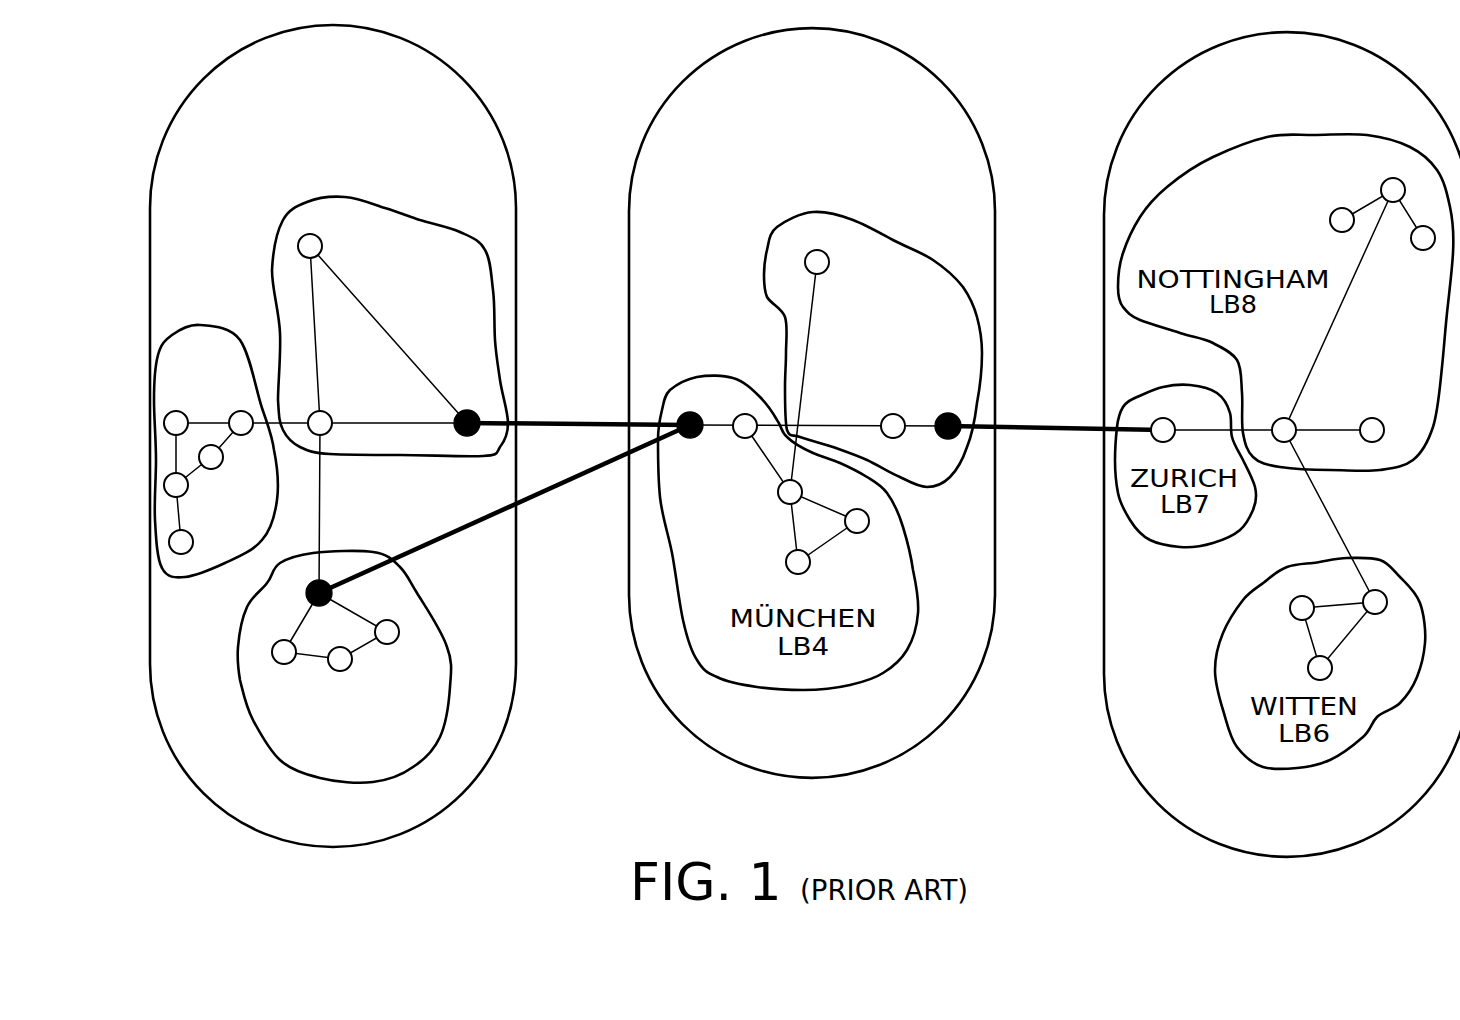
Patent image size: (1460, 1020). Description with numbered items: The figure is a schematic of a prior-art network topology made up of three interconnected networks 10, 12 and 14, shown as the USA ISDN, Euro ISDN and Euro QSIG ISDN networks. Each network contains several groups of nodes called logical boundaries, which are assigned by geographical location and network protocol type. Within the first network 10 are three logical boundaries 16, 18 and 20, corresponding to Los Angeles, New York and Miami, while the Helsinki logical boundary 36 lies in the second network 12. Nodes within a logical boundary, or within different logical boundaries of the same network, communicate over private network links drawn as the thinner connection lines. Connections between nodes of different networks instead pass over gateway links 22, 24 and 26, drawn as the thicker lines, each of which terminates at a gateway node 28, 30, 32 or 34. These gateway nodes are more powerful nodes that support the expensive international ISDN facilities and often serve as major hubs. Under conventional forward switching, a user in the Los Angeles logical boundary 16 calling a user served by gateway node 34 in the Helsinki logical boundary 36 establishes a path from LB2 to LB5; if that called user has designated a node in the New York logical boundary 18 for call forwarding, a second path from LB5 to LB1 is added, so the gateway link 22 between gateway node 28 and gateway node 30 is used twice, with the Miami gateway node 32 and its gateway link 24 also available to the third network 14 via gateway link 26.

The first network 10 is at (506, 727).
The second network 12 is at (667, 718).
The third network 14 is at (1104, 722).
The logical boundary 16 is at (218, 325).
The New York logical boundary 18 is at (357, 197).
The logical boundary 20 is at (237, 670).
The gateway link 22 is at (588, 422).
The gateway link 24 is at (552, 489).
The gateway link 26 is at (1077, 424).
The gateway node 28 is at (478, 412).
The gateway node 30 is at (683, 414).
The gateway node 32 is at (327, 583).
The gateway node 34 is at (958, 415).
The Helsinki logical boundary 36 is at (947, 264).